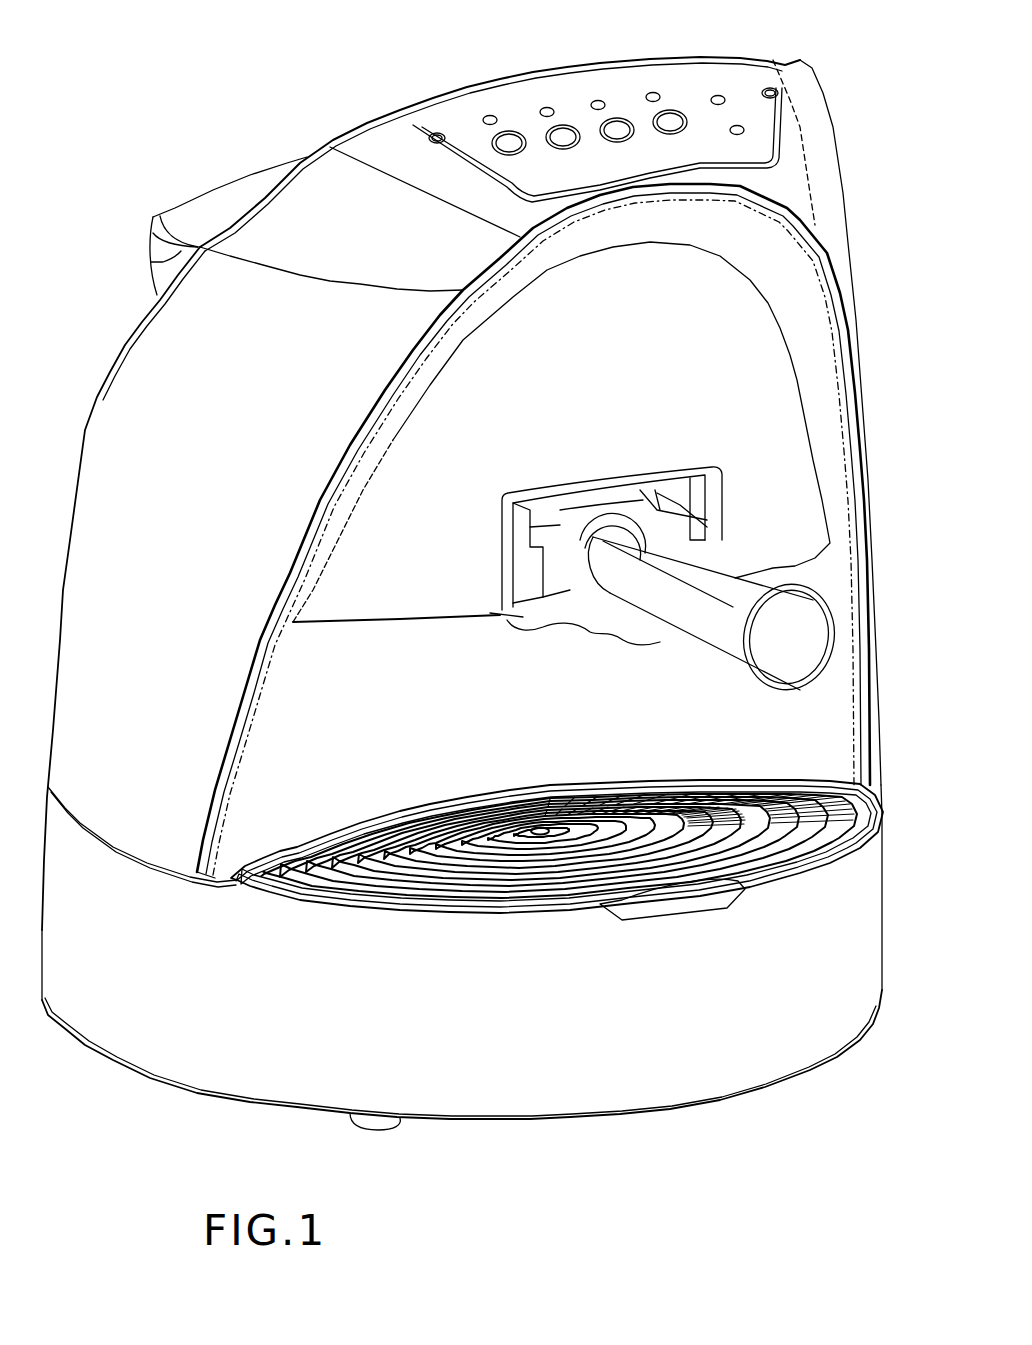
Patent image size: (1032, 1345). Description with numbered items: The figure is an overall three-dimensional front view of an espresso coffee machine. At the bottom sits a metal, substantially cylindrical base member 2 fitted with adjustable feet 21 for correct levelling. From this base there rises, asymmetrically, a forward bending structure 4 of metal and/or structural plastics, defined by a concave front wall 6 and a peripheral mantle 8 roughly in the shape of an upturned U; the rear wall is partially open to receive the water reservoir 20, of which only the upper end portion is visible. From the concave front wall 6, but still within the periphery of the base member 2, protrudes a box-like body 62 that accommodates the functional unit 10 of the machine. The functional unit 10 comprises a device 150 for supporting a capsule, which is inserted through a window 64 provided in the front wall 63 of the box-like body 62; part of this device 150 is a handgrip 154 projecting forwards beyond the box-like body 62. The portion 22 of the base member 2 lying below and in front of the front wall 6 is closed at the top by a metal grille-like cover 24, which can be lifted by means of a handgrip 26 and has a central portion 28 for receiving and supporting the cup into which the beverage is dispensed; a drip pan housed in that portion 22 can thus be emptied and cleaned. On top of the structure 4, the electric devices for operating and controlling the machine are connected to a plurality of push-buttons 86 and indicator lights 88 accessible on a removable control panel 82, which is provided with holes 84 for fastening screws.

The base member 2 is at (674, 1114).
The forward bending structure 4 is at (320, 140).
The concave front wall 6 is at (833, 373).
The peripheral mantle 8 is at (87, 640).
The functional unit 10 is at (547, 650).
The water reservoir 20 is at (195, 210).
The adjustable feet 21 is at (370, 1131).
The portion of the base member 22 is at (823, 1035).
The grille-like cover 24 is at (757, 853).
The handgrip 26 is at (657, 910).
The central portion 28 is at (541, 838).
The box-like body 62 is at (283, 790).
The front wall of the box-like body 63 is at (733, 348).
The window 64 is at (722, 512).
The control panel 82 is at (693, 90).
The holes 84 is at (440, 136).
The push-buttons 86 is at (510, 140).
The indicator lights 88 is at (490, 118).
The device for supporting a capsule 150 is at (684, 496).
The handgrip 154 is at (807, 605).